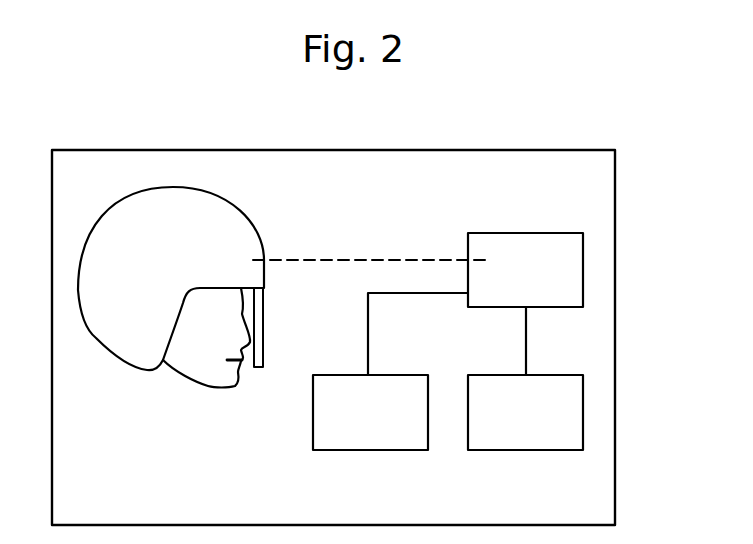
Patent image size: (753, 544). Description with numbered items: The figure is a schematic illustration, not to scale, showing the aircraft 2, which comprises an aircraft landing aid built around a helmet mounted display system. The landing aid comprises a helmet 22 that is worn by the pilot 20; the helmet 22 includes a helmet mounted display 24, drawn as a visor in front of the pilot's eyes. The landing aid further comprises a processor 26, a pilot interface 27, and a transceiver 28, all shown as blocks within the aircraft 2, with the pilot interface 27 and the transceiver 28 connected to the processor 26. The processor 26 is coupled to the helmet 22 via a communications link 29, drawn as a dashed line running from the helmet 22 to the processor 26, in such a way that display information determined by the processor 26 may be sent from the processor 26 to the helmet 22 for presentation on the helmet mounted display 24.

The aircraft 2 is at (570, 149).
The pilot 20 is at (190, 383).
The helmet 22 is at (93, 335).
The helmet mounted display 24 is at (263, 327).
The processor 26 is at (583, 248).
The pilot interface 27 is at (368, 450).
The transceiver 28 is at (532, 450).
The communications link 29 is at (313, 258).